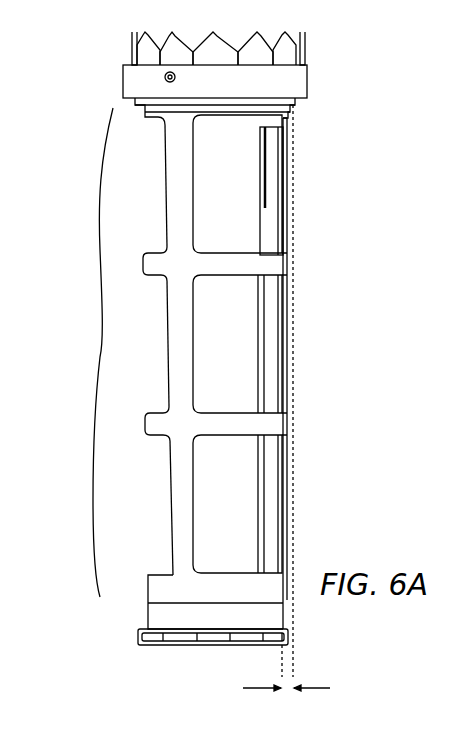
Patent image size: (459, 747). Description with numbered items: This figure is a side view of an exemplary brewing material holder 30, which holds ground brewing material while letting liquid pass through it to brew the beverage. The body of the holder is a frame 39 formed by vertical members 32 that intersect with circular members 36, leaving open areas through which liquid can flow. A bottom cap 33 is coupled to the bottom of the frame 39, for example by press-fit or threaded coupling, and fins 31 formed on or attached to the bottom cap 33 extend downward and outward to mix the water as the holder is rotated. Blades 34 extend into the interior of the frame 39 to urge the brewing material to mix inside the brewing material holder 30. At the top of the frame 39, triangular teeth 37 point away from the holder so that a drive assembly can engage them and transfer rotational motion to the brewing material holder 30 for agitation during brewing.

The brewing material holder 30 is at (315, 136).
The fins 31 is at (160, 645).
The vertical members 32 is at (193, 195).
The bottom cap 33 is at (215, 602).
The blades 34 is at (282, 160).
The circular members 36 is at (228, 268).
The triangular teeth 37 is at (262, 49).
The frame 39 is at (100, 357).